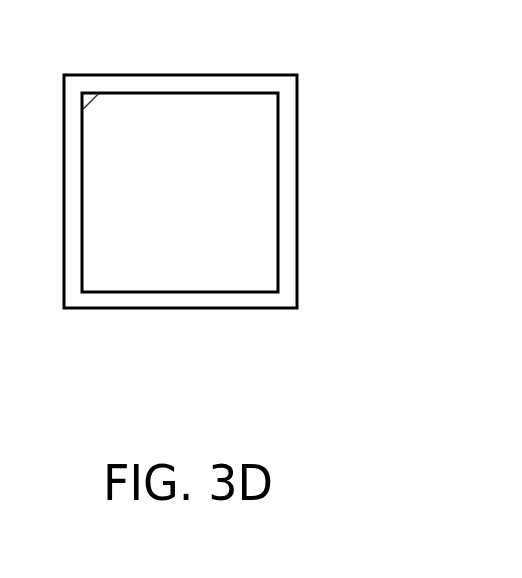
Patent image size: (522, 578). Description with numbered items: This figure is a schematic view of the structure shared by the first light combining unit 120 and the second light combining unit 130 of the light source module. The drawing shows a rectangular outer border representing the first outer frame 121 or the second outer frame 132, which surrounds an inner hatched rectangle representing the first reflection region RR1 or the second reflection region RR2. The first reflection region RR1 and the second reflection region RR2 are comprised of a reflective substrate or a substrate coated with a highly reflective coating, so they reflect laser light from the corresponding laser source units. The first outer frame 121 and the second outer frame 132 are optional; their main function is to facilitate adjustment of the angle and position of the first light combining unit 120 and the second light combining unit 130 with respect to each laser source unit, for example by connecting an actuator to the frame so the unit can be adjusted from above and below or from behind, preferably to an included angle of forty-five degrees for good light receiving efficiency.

The first outer frame 121 is at (180, 156).
The second outer frame 132 is at (195, 85).
The first reflection region RR1 is at (261, 171).
The second reflection region RR2 is at (236, 215).
The first light combining unit 120 is at (261, 196).
The second light combining unit 130 is at (261, 196).